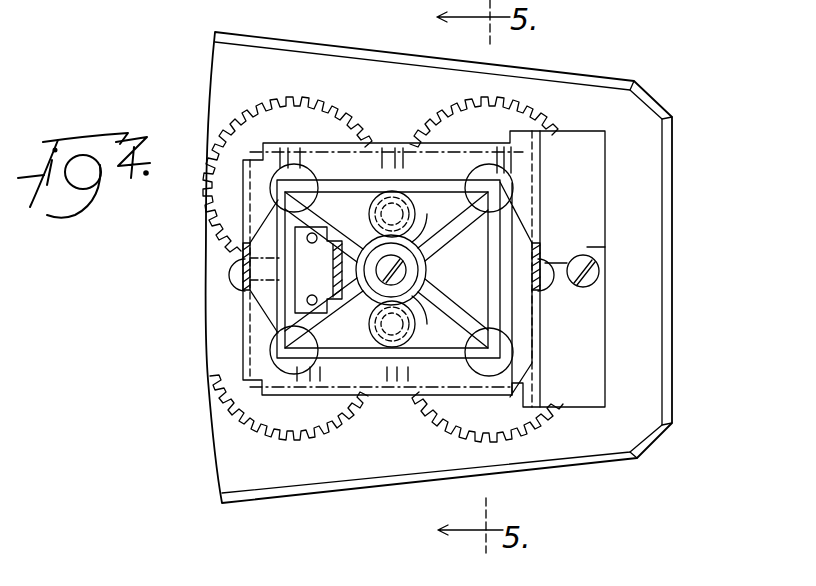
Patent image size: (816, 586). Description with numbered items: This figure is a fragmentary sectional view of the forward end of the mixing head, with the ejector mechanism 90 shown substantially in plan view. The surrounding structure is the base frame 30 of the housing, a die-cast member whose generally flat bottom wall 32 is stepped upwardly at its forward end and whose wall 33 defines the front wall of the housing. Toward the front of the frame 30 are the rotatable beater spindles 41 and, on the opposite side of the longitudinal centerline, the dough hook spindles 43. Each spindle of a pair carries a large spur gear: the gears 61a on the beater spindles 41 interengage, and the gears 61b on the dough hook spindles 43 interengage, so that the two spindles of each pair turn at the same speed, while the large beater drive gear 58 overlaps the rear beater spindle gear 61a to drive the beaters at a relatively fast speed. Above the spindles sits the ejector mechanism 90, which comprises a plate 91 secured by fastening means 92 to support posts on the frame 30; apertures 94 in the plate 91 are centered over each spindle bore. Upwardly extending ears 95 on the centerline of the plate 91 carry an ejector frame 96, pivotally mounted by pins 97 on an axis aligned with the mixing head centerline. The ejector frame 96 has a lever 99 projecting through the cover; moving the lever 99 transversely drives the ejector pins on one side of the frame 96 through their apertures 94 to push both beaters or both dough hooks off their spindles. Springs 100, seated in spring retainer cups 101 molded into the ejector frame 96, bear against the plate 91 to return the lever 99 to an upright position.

The base frame 30 is at (430, 477).
The bottom wall 32 is at (325, 468).
The wall 33 is at (672, 333).
The beater spindles 41 is at (367, 129).
The dough hook spindles 43 is at (357, 420).
The beater drive gear 58 is at (226, 111).
The beater spindle gears 61a is at (297, 96).
The dough hook spindle gears 61b is at (293, 442).
The ejector mechanism 90 is at (332, 134).
The plate 91 is at (490, 152).
The fastening means 92 is at (398, 274).
The apertures 94 is at (305, 172).
The ears 95 is at (541, 192).
The ejector frame 96 is at (487, 317).
The pins 97 is at (238, 282).
The lever 99 is at (318, 270).
The springs 100 is at (413, 175).
The spring retainer cups 101 is at (427, 227).